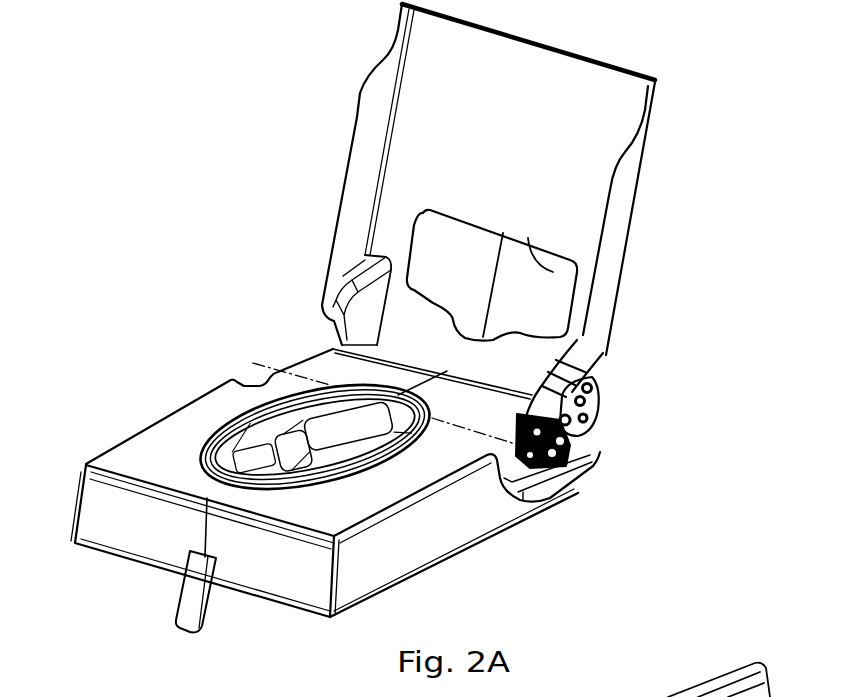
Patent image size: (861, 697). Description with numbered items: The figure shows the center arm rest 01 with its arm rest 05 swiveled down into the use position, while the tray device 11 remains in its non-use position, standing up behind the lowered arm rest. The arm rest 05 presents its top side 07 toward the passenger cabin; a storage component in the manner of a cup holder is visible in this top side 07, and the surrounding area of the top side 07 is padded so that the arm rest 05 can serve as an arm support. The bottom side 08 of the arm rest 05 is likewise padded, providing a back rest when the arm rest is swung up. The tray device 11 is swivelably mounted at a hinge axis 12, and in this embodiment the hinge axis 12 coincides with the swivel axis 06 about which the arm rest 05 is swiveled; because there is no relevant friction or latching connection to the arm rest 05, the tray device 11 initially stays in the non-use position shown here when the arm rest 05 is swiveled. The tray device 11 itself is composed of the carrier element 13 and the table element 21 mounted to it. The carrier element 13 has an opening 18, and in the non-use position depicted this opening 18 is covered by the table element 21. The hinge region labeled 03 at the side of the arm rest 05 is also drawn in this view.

The center arm rest 01 is at (134, 50).
The tray device 11 is at (245, 158).
The carrier element 13 is at (560, 83).
The opening 18 is at (553, 272).
The table element 21 is at (533, 290).
The arm rest 05 is at (160, 296).
The top side 07 is at (152, 433).
The bottom side 08 is at (150, 596).
The hinge assembly 03 is at (590, 414).
The swivel axis 06 is at (628, 495).
The hinge axis 12 is at (598, 468).